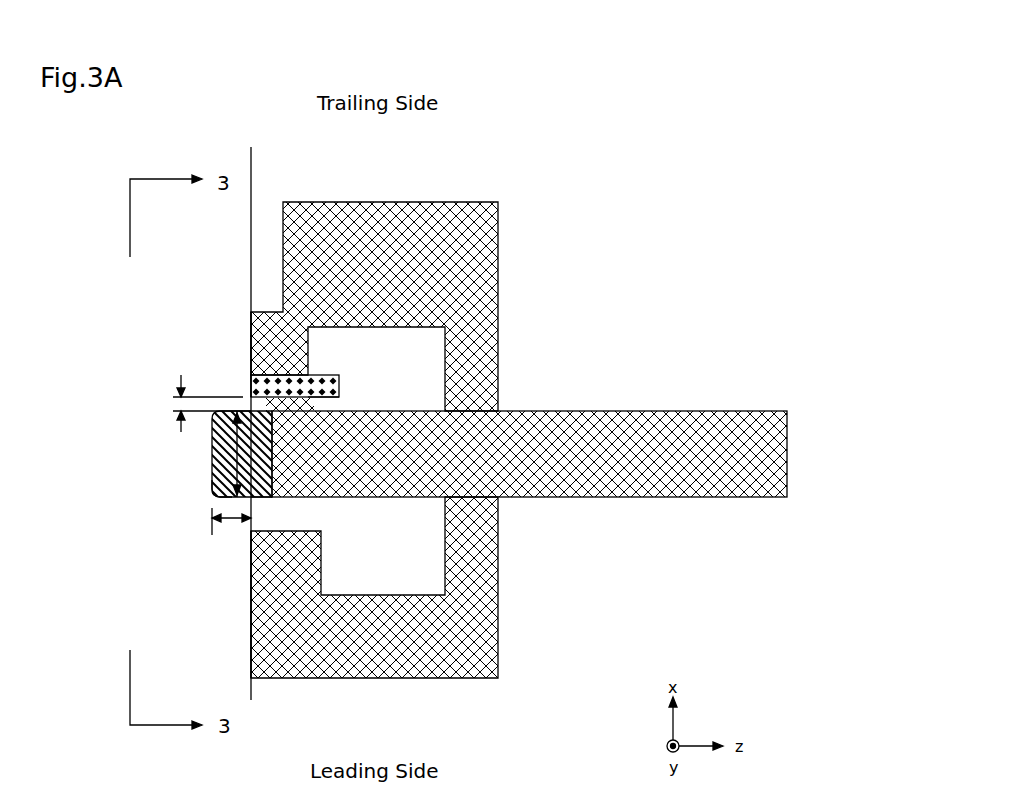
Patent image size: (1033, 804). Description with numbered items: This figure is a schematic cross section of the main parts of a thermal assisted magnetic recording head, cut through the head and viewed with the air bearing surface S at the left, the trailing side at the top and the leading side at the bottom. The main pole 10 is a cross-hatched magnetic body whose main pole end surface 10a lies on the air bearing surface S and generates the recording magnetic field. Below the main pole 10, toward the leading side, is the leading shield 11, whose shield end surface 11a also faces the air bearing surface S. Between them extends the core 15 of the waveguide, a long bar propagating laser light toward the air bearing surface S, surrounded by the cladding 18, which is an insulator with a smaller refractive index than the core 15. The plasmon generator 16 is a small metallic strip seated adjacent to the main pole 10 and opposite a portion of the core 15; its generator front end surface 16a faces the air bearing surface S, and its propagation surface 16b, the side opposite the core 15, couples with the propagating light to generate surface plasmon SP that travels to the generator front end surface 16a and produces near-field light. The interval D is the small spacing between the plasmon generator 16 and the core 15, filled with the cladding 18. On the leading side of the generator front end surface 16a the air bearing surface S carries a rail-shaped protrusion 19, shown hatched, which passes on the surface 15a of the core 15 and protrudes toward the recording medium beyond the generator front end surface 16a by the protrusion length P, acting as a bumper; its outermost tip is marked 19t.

The main pole 10 is at (399, 202).
The main pole end surface 10a is at (251, 345).
The leading shield 11 is at (370, 678).
The shield end surface 11a is at (251, 625).
The core 15 is at (594, 411).
The surface of the core 15a is at (257, 497).
The plasmon generator 16 is at (336, 412).
The generator front end surface 16a is at (251, 387).
The propagation surface 16b is at (342, 411).
The cladding 18 is at (392, 533).
The protrusion 19 is at (212, 453).
The tip of protrusion 19t is at (225, 490).
The air bearing surface S is at (249, 403).
The surface plasmon SP is at (327, 376).
The interval D is at (199, 403).
The protrusion length P is at (231, 528).